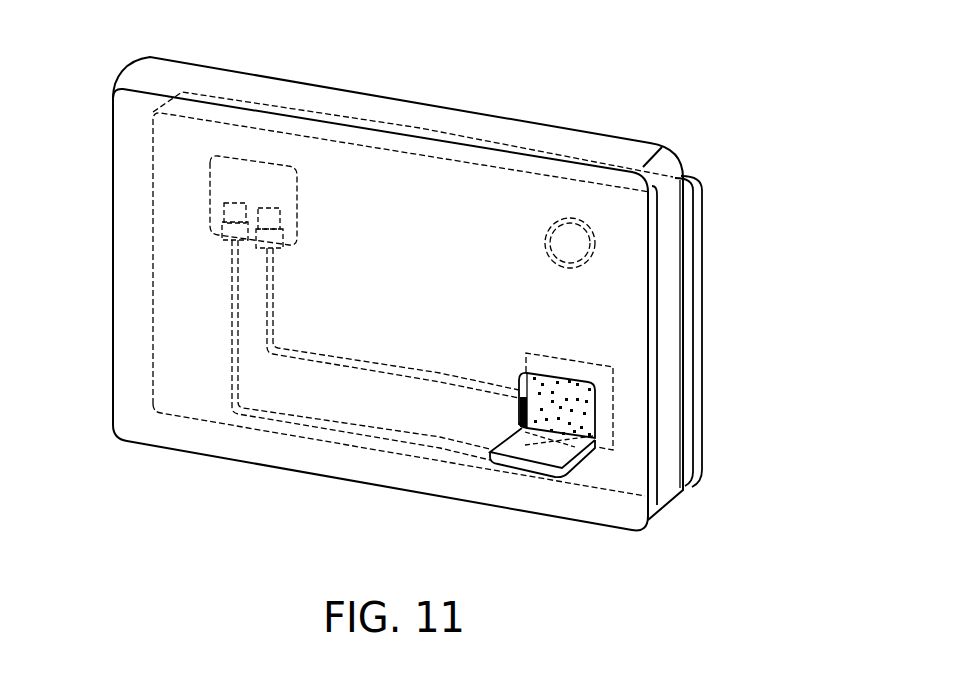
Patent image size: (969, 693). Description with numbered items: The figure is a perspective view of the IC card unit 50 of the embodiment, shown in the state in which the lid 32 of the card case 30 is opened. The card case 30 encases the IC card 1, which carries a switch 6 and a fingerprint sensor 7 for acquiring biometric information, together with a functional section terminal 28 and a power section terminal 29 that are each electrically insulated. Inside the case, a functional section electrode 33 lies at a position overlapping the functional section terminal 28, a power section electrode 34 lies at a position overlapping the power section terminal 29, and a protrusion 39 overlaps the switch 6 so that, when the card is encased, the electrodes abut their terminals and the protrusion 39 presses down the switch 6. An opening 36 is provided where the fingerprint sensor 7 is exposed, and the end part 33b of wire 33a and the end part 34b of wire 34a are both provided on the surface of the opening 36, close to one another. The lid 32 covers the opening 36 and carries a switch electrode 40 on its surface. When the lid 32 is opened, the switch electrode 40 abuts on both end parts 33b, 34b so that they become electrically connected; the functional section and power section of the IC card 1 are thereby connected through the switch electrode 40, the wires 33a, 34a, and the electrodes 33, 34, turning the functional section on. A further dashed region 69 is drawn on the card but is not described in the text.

The IC card 1 is at (706, 251).
The switch 6 is at (567, 220).
The fingerprint sensor 7 is at (613, 378).
The functional section terminal 28 is at (223, 213).
The power section terminal 29 is at (269, 207).
The card case 30 is at (434, 100).
The lid 32 is at (565, 455).
The functional section electrode 33 is at (222, 247).
The wire 33a is at (313, 427).
The end part 33b is at (593, 436).
The power section electrode 34 is at (273, 258).
The wire 34a is at (440, 388).
The end part 34b is at (492, 440).
The opening 36 is at (577, 403).
The protrusion 39 is at (580, 250).
The switch electrode 40 is at (547, 450).
The IC card unit 50 is at (682, 82).
The antenna region 69 is at (256, 175).